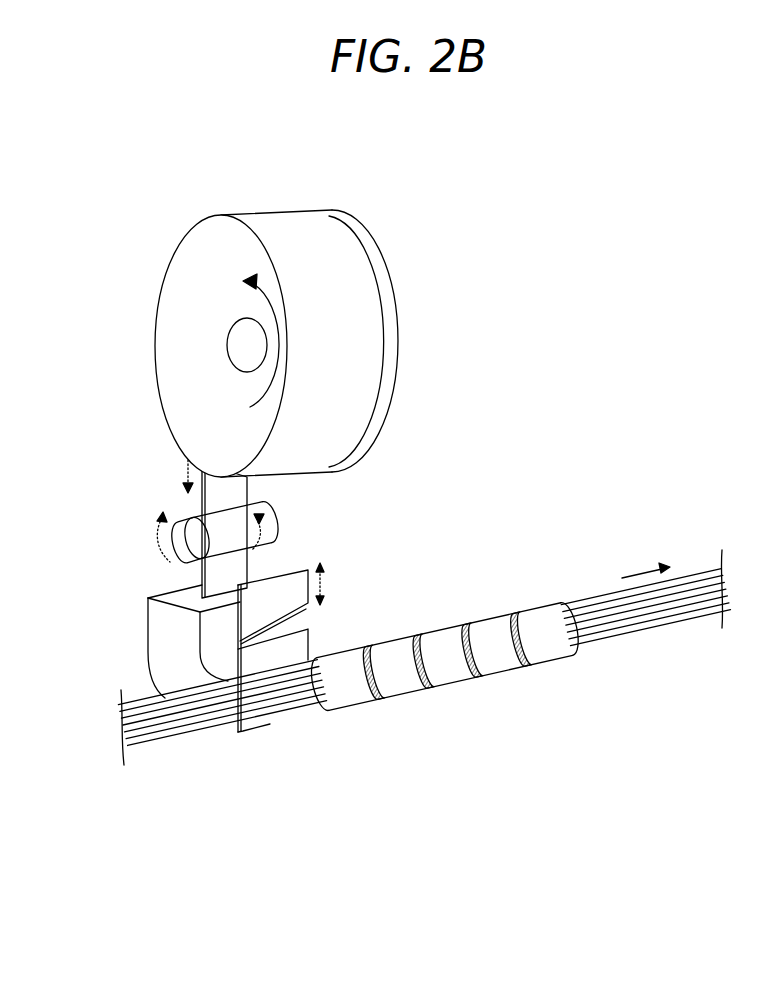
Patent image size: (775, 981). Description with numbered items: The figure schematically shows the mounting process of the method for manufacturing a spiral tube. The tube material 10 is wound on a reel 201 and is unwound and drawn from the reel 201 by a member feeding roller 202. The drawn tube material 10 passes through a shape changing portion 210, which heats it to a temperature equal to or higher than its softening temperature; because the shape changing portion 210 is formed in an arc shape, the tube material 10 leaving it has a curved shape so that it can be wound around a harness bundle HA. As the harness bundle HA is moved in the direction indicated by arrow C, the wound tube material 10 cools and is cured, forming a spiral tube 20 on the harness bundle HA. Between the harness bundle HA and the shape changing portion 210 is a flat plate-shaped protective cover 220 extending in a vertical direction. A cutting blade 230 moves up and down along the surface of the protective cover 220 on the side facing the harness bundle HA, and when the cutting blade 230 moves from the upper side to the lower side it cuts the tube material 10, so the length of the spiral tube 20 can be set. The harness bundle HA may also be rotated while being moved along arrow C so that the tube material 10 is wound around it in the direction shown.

The reel 201 is at (188, 278).
The tube material 10 is at (236, 490).
The member feeding roller 202 is at (172, 536).
The cutting blade 230 is at (282, 606).
The protective cover 220 is at (293, 645).
The shape changing portion 210 is at (162, 633).
The spiral tube 20 is at (393, 694).
The harness bundle HA is at (160, 738).
The arrow C is at (640, 568).